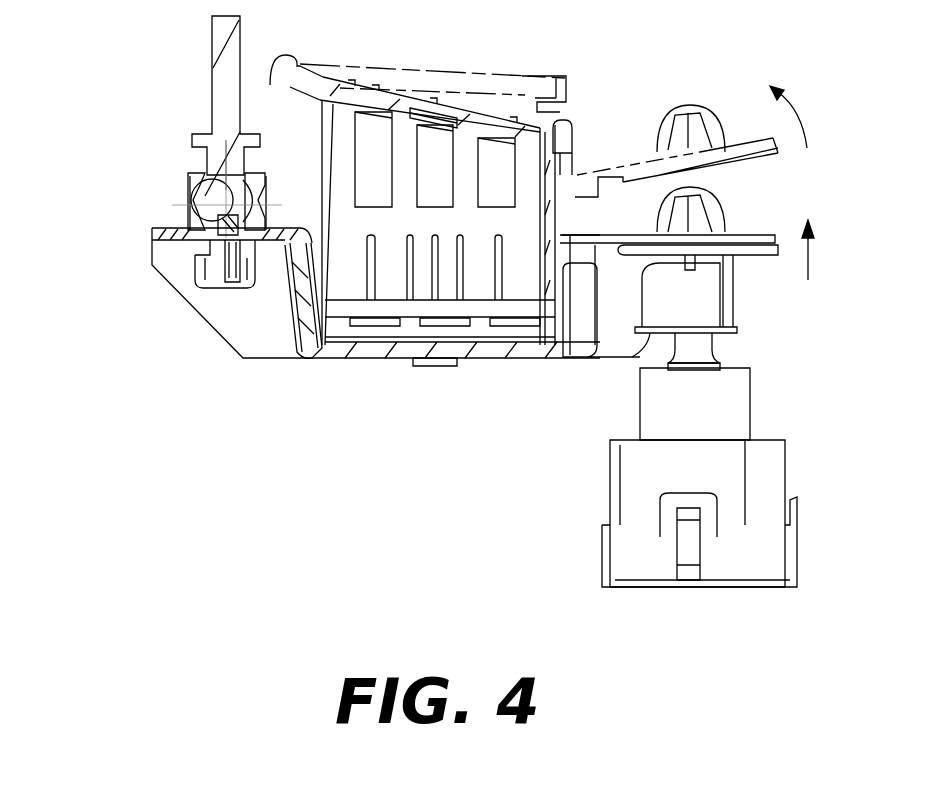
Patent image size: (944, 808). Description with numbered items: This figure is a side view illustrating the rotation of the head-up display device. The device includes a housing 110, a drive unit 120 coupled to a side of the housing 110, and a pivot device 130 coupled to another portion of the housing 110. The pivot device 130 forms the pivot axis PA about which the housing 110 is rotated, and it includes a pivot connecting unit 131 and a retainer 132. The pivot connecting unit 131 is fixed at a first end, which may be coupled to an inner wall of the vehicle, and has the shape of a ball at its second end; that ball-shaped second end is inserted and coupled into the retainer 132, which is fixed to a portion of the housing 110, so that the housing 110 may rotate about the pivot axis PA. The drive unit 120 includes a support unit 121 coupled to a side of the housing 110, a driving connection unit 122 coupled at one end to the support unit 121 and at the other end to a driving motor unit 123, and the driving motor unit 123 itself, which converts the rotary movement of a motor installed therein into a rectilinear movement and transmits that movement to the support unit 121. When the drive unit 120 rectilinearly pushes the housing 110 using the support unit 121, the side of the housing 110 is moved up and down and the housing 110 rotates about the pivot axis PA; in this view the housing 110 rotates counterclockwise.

The housing 110 is at (180, 321).
The drive unit 120 is at (560, 463).
The support unit 121 is at (738, 312).
The driving connection unit 122 is at (752, 408).
The driving motor unit 123 is at (783, 478).
The pivot device 130 is at (136, 160).
The pivot connecting unit 131 is at (192, 140).
The retainer 132 is at (186, 210).
The pivot axis PA is at (198, 200).